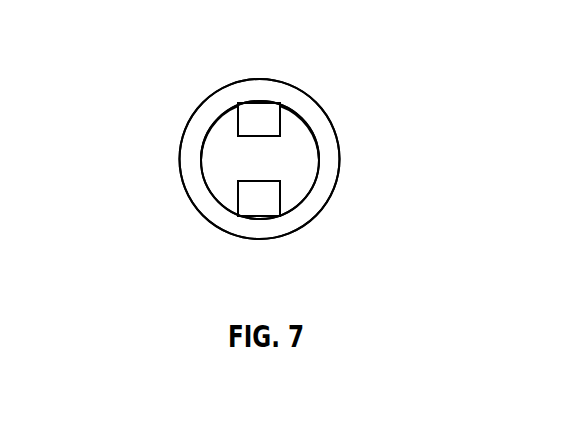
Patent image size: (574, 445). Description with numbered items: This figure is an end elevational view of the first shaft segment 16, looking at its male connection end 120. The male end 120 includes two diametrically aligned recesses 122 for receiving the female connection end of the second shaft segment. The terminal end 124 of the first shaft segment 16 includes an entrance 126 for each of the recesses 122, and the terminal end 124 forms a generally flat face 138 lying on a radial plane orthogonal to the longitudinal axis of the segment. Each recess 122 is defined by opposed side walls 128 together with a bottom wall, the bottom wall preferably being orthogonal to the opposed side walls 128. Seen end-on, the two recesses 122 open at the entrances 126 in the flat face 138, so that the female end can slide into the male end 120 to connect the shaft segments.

The first shaft segment 16 is at (320, 80).
The male connection end 120 is at (216, 75).
The recesses 122 is at (261, 105).
The terminal end 124 is at (303, 170).
The entrance 126 is at (268, 195).
The opposed side wall 128 is at (234, 129).
The flat face 138 is at (204, 163).